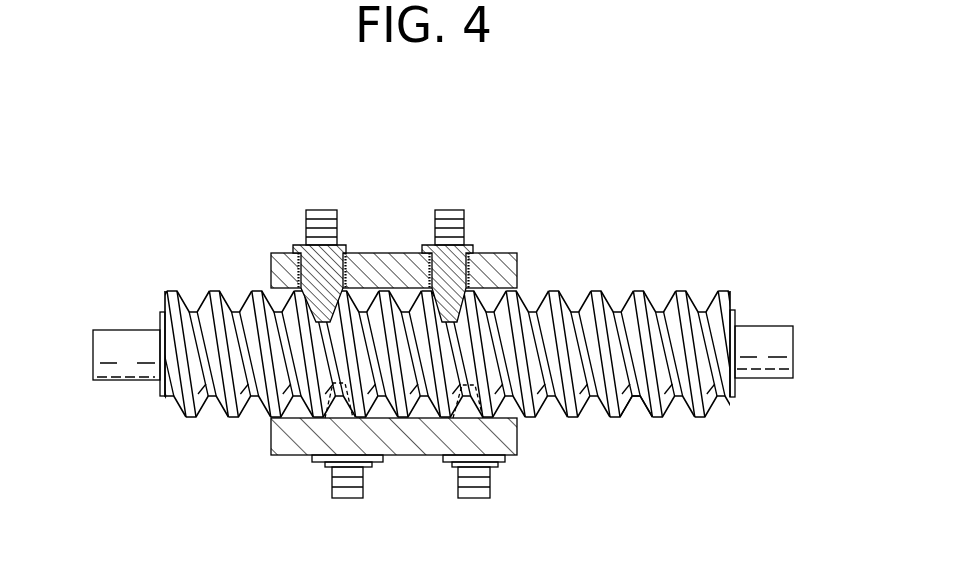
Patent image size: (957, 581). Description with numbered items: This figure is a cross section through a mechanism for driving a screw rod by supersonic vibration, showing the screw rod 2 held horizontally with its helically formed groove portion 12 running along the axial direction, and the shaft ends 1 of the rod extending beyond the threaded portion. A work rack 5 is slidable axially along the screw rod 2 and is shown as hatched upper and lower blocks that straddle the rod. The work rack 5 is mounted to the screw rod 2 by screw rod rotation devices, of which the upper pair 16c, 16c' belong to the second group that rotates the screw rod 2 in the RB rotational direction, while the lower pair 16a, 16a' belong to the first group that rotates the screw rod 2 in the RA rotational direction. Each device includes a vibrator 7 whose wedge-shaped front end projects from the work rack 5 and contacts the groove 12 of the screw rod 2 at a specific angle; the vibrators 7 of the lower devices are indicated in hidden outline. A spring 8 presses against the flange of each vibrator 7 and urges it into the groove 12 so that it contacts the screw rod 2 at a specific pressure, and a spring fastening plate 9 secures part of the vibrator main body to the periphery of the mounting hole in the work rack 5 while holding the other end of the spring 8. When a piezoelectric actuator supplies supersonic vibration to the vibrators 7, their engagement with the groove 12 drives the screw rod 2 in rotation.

The feed screw shaft 1 is at (732, 275).
The screw rod 2 is at (652, 300).
The work rack 5 is at (447, 200).
The vibrator 7 is at (303, 244).
The spring 8 is at (272, 256).
The spring fastening plate 9 is at (418, 248).
The groove portion 12 is at (648, 405).
The screw rod rotation device of first group 16a is at (535, 496).
The screw rod rotation device of first group 16a' is at (319, 512).
The screw rod rotation device of second group 16c is at (525, 188).
The screw rod rotation device of second group 16c' is at (286, 176).